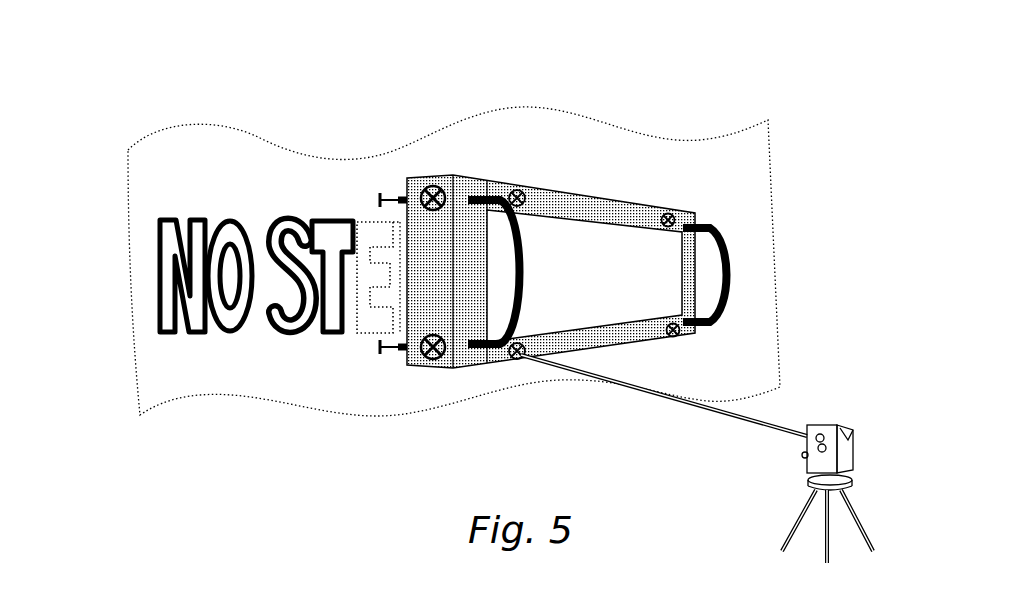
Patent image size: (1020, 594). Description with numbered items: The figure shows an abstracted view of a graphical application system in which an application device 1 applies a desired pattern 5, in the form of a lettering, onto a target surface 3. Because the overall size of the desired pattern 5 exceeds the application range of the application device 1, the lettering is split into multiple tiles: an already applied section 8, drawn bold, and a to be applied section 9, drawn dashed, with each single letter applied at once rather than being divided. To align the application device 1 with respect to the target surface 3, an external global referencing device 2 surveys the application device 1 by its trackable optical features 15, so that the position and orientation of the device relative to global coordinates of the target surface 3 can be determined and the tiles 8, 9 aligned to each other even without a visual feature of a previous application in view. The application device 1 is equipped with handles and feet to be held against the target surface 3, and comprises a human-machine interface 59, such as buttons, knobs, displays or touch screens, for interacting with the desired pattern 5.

The application device 1 is at (572, 188).
The external global referencing device 2 is at (790, 485).
The target surface 3 is at (133, 302).
The desired pattern 5 is at (377, 222).
The already applied section 8 is at (237, 331).
The to be applied section 9 is at (368, 334).
The trackable optical features 15 is at (518, 190).
The human-machine interface 59 is at (626, 258).